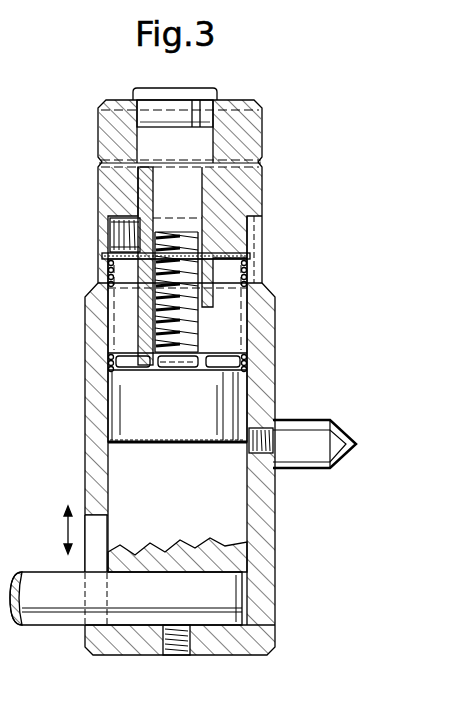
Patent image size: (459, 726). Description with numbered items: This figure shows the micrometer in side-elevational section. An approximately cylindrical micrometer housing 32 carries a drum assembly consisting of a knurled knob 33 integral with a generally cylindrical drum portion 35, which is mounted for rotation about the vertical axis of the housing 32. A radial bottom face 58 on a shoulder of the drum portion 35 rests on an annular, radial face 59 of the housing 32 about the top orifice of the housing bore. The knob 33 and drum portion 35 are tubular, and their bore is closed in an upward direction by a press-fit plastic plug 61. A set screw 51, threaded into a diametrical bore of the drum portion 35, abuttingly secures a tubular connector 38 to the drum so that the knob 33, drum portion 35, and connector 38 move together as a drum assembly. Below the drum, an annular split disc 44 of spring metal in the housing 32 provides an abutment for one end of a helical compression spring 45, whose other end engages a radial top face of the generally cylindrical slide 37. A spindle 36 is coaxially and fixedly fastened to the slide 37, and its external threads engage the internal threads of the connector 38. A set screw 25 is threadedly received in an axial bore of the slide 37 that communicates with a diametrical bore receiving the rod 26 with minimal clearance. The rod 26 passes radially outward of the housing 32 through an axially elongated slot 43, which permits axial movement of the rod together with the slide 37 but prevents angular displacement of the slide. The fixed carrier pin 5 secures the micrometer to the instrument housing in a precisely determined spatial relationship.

The knurled knob 33 is at (257, 126).
The plastic plug 61 is at (165, 106).
The drum portion 35 is at (110, 204).
The tubular connector 38 is at (140, 182).
The radial bottom face 58 is at (259, 190).
The annular radial face 59 is at (262, 228).
The set screw 51 is at (110, 236).
The annular split disc 44 is at (102, 258).
The helical compression spring 45 is at (250, 268).
The spindle 36 is at (150, 318).
The slide 37 is at (140, 413).
The micrometer housing 32 is at (262, 604).
The axially elongated slot 43 is at (92, 560).
The rod 26 is at (44, 614).
The set screw 25 is at (175, 650).
The carrier pin 5 is at (310, 456).